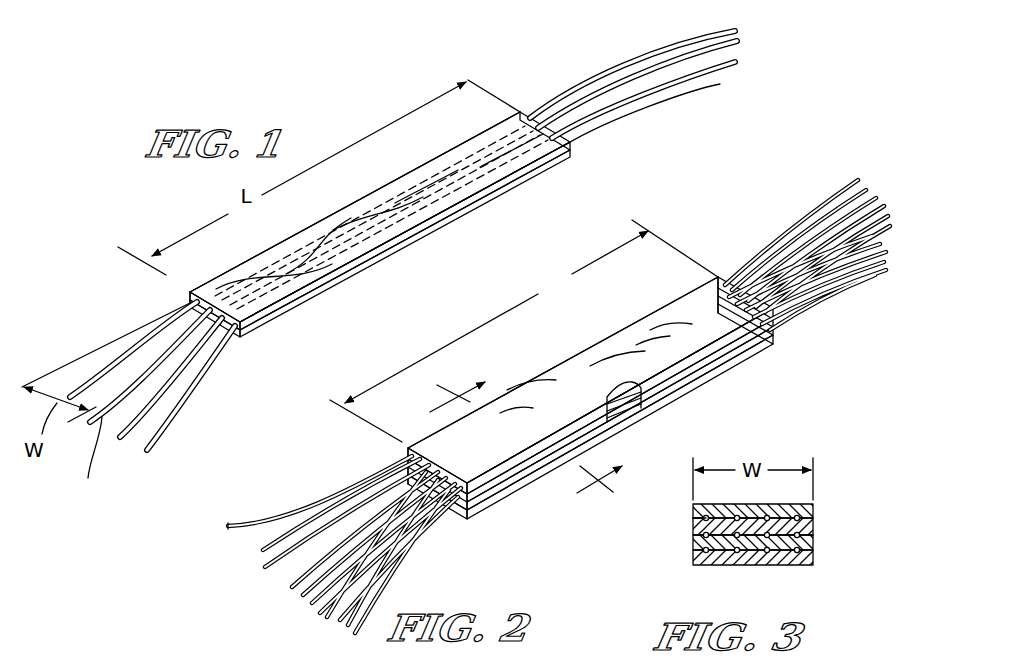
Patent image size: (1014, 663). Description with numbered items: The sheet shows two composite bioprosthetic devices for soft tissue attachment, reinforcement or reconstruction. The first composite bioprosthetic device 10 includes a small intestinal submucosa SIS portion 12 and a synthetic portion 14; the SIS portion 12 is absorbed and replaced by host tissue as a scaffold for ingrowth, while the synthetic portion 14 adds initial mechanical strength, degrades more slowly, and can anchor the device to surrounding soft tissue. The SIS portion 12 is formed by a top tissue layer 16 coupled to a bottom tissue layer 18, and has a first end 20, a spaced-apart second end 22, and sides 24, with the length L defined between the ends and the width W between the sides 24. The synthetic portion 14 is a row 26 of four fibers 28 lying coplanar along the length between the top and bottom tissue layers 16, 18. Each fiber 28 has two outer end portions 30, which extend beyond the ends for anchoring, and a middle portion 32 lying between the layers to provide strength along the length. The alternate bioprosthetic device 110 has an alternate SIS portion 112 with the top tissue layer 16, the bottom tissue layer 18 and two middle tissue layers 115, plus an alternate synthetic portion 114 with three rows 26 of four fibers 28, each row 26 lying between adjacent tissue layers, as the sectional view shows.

In FIG. 1, the composite bioprosthetic device 10 is at (543, 86).
In FIG. 1, the SIS portion 12 is at (524, 193).
In FIG. 1, the synthetic portion 14 is at (738, 78).
In FIG. 1, the top tissue layer 16 is at (511, 116).
In FIG. 2, the top tissue layer 16 is at (407, 443).
In FIG. 3, the top tissue layer 16 is at (814, 507).
In FIG. 1, the bottom tissue layer 18 is at (468, 216).
In FIG. 2, the bottom tissue layer 18 is at (518, 486).
In FIG. 3, the bottom tissue layer 18 is at (786, 562).
In FIG. 1, the first end 20 is at (190, 302).
In FIG. 2, the first end 20 is at (433, 510).
In FIG. 1, the second end 22 is at (587, 128).
In FIG. 2, the second end 22 is at (730, 268).
In FIG. 1, the sides 24 is at (382, 188).
In FIG. 2, the sides 24 is at (588, 347).
In FIG. 1, the row 26 is at (196, 382).
In FIG. 3, the row 26 is at (818, 521).
In FIG. 1, the fibers 28 is at (607, 68).
In FIG. 2, the fibers 28 is at (764, 240).
In FIG. 3, the fibers 28 is at (700, 518).
In FIG. 1, the outer end portions 30 is at (577, 90).
In FIG. 2, the outer end portions 30 is at (813, 310).
In FIG. 1, the middle portion 32 is at (228, 275).
In FIG. 2, the middle portion 32 is at (622, 413).
In FIG. 2, the alternate bioprosthetic device 110 is at (716, 250).
In FIG. 3, the alternate bioprosthetic device 110 is at (829, 480).
In FIG. 2, the alternate SIS portion 112 is at (723, 385).
In FIG. 2, the alternate synthetic portion 114 is at (817, 207).
In FIG. 2, the middle tissue layers 115 is at (487, 490).
In FIG. 3, the middle tissue layers 115 is at (698, 524).